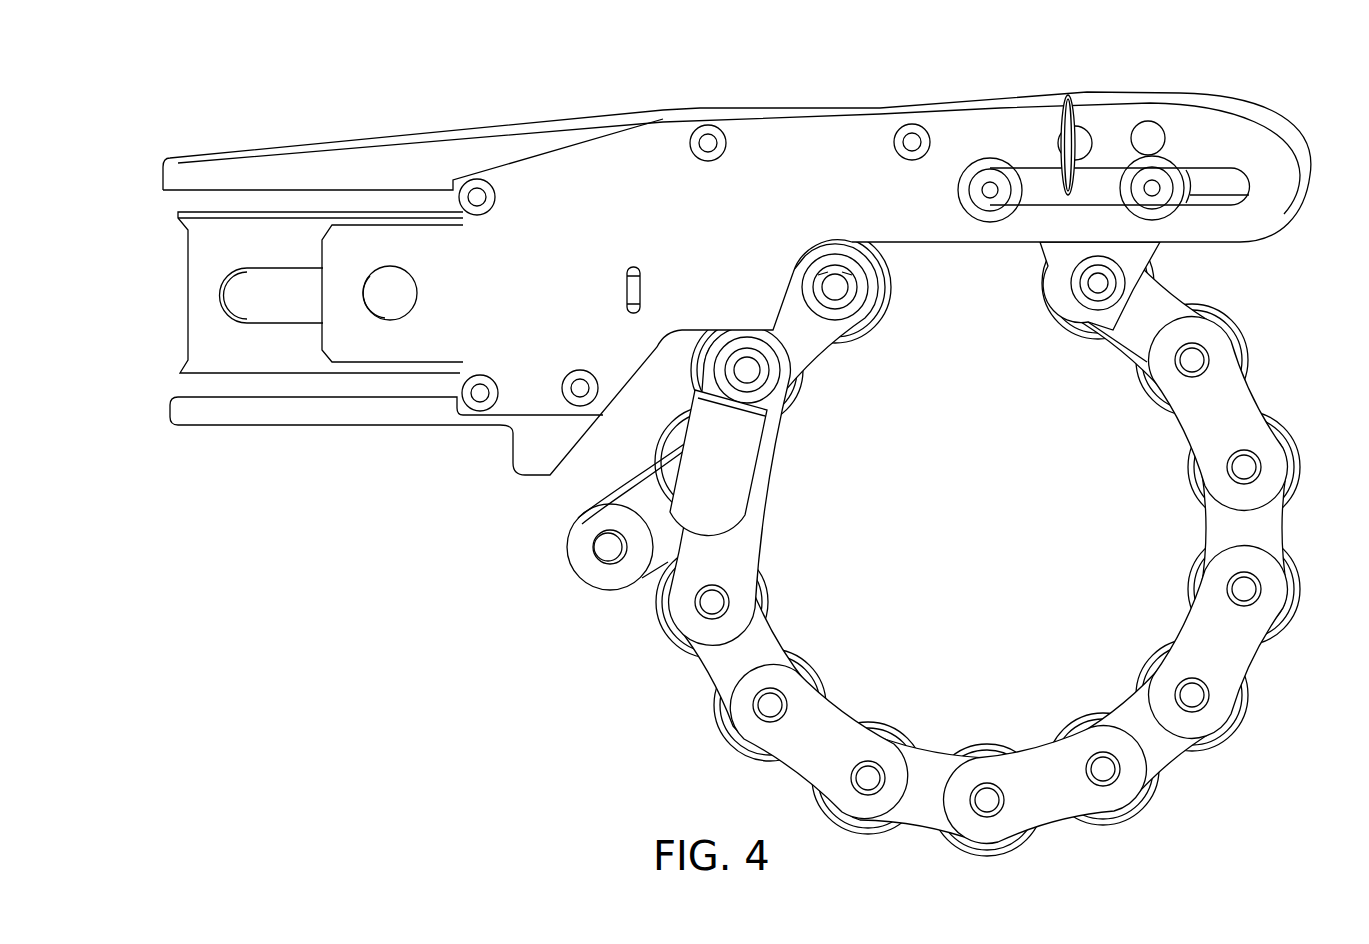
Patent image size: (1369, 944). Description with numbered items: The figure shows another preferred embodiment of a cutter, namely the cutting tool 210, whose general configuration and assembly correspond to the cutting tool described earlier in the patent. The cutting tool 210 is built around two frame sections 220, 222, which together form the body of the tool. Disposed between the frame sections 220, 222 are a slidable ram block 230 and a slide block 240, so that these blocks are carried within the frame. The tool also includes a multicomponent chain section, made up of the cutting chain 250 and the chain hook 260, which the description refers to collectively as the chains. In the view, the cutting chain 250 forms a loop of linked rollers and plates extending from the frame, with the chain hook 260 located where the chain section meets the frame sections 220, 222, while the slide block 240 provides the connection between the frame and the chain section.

The cutting tool 210 is at (737, 443).
The frame section 220 is at (610, 180).
The frame section 222 is at (1040, 93).
The slidable ram block 230 is at (268, 357).
The slide block 240 is at (1068, 272).
The cutting chain 250 is at (1140, 710).
The chain hook 260 is at (807, 343).